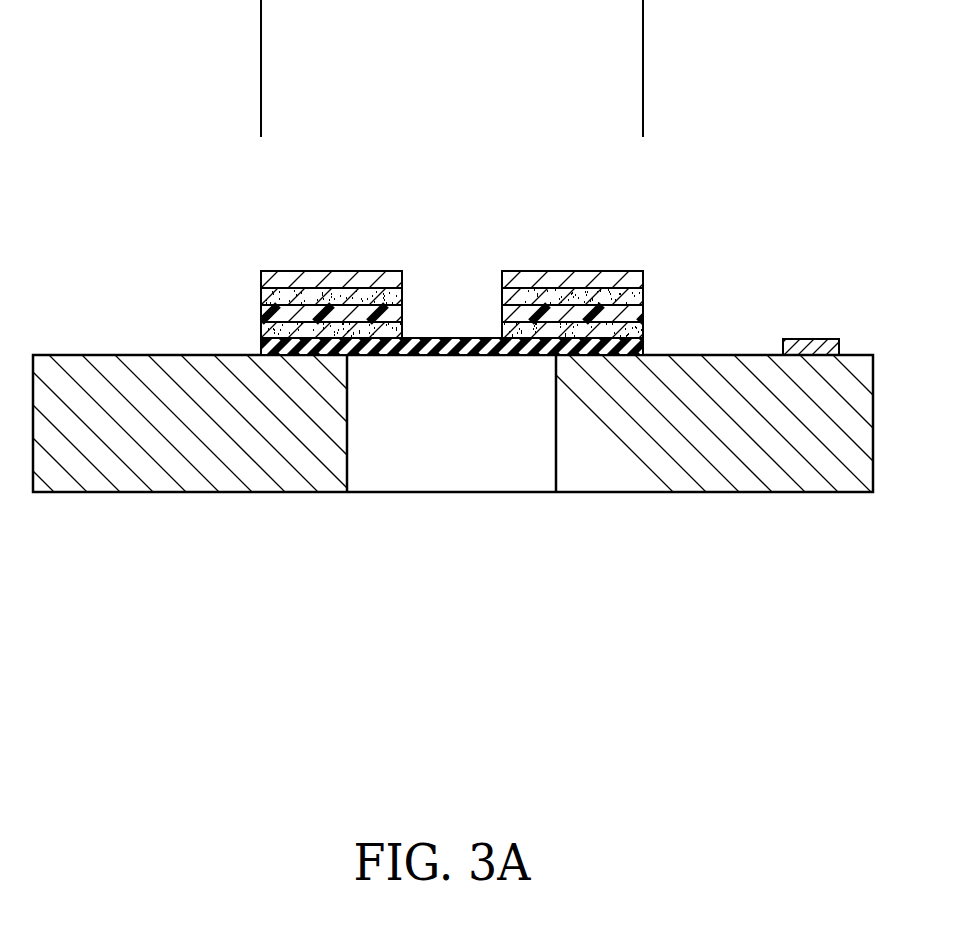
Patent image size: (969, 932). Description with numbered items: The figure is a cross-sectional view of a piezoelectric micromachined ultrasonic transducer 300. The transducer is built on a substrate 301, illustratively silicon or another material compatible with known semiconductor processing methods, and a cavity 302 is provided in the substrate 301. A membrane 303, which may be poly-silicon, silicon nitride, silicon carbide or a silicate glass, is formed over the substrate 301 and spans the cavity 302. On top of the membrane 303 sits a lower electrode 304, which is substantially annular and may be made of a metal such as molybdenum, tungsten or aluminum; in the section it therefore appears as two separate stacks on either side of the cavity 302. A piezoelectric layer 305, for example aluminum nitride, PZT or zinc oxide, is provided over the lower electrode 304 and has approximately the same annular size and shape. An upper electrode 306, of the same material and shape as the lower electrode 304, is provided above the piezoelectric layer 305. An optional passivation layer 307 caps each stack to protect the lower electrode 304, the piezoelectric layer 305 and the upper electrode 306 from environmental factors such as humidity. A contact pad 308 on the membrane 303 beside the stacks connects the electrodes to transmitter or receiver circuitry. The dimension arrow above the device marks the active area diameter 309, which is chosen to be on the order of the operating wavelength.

The transducer 300 is at (53, 96).
The substrate 301 is at (167, 429).
The cavity 302 is at (450, 443).
The membrane 303 is at (261, 348).
The lower electrode 304 is at (644, 333).
The piezoelectric layer 305 is at (261, 315).
The upper electrode 306 is at (644, 297).
The passivation layer 307 is at (328, 271).
The contact pads 308 is at (810, 338).
The active area diameter 309 is at (261, 72).